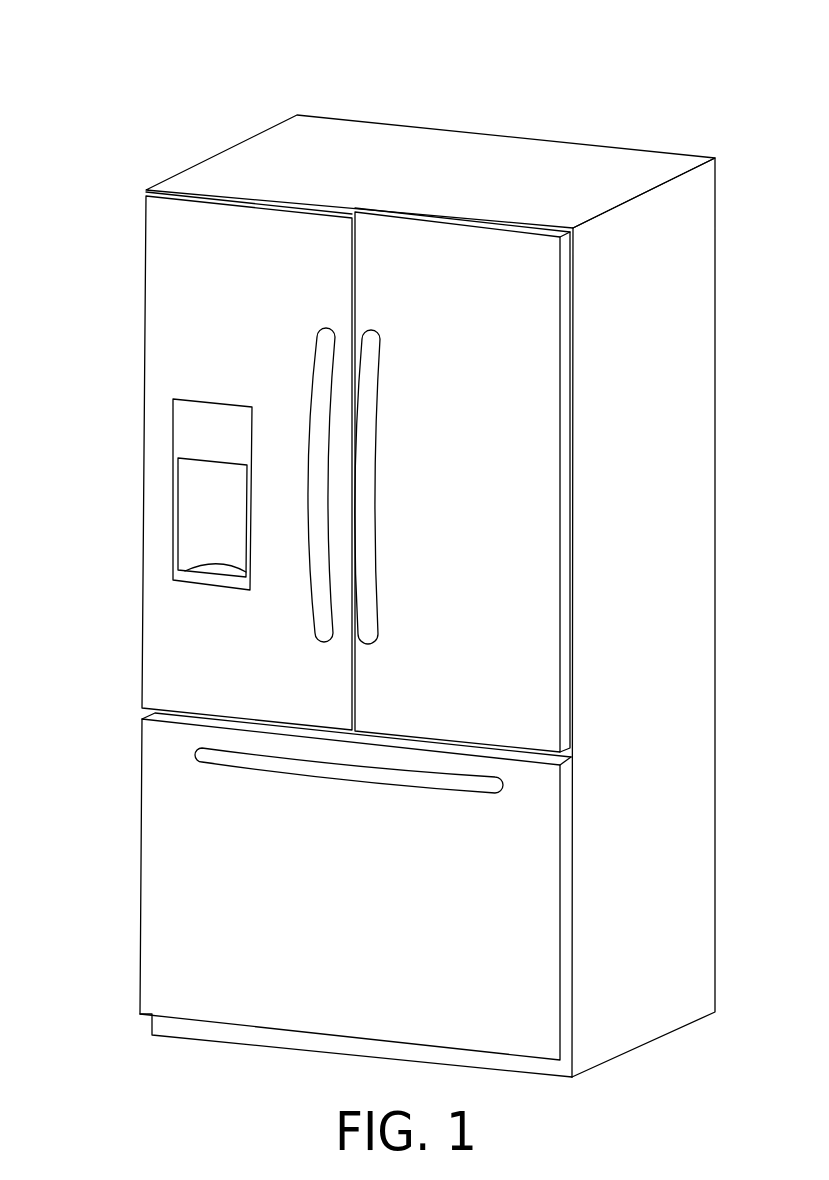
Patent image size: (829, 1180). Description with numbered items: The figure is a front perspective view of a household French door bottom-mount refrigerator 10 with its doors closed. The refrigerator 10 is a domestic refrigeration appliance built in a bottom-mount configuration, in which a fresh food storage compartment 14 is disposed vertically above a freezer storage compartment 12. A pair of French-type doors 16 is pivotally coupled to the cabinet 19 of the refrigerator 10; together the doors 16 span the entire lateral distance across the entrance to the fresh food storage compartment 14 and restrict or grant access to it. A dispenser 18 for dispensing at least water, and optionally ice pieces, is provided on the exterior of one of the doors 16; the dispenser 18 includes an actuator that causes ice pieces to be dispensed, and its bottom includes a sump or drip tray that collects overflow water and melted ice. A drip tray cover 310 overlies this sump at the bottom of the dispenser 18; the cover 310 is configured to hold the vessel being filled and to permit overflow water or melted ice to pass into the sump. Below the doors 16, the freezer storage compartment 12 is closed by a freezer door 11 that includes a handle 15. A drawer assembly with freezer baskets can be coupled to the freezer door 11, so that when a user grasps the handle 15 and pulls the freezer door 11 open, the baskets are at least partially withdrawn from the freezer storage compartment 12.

The refrigerator 10 is at (677, 100).
The freezer door 11 is at (523, 927).
The freezer storage compartment 12 is at (170, 910).
The fresh food storage compartment 14 is at (163, 231).
The handle 15 is at (309, 797).
The doors 16 is at (157, 305).
The dispenser 18 is at (193, 510).
The cabinet 19 is at (687, 297).
The drip tray cover 310 is at (180, 568).